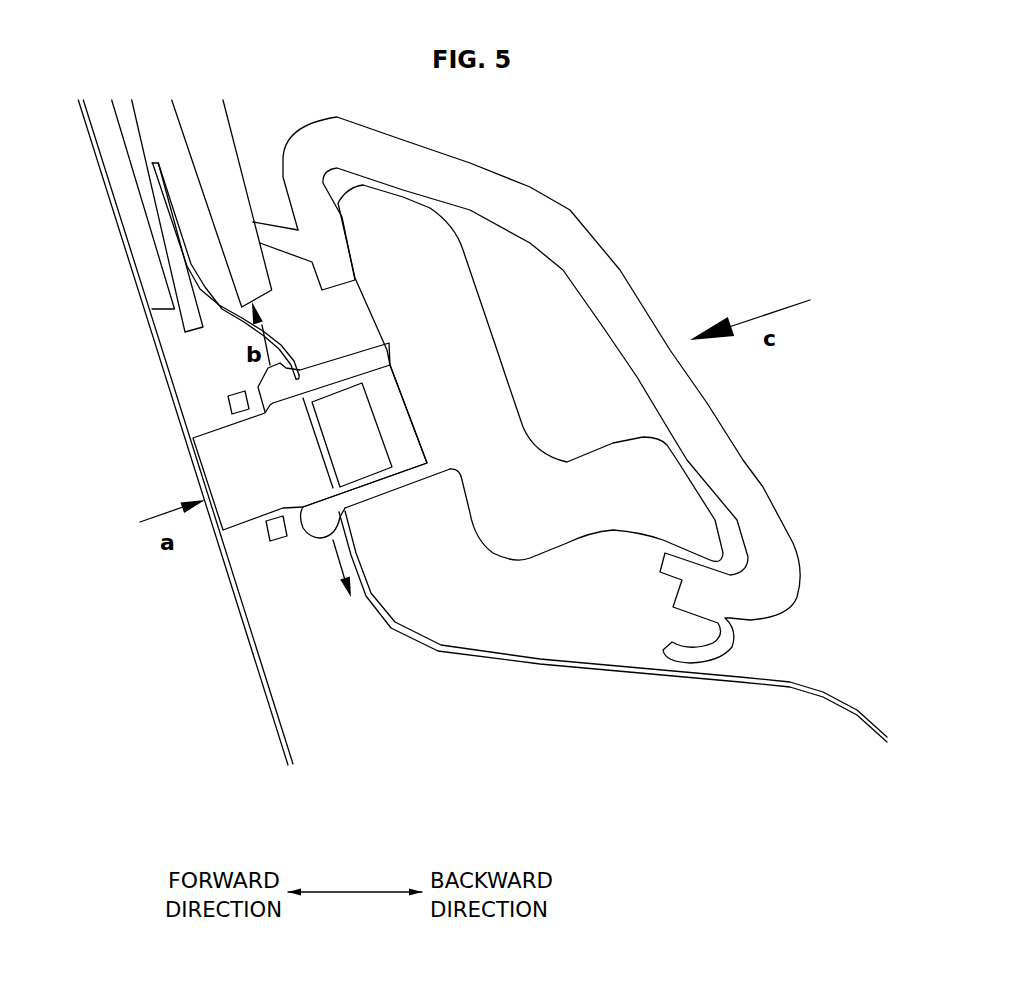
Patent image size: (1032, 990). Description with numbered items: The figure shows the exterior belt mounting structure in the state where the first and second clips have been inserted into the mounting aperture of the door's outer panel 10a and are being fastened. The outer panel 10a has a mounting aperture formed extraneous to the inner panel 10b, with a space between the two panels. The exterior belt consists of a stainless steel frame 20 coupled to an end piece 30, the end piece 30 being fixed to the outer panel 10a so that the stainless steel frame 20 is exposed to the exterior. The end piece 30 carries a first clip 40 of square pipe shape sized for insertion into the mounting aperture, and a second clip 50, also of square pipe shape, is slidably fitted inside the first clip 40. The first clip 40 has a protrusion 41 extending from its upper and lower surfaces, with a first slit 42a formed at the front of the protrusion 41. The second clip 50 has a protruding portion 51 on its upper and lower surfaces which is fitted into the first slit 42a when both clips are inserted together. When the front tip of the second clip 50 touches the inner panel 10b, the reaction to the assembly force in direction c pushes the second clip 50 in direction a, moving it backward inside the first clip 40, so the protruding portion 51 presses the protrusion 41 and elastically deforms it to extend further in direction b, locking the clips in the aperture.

The outer panel 10a is at (600, 668).
The inner panel 10b is at (268, 702).
The stainless steel frame 20 is at (692, 423).
The end piece 30 is at (572, 507).
The first clip 40 is at (373, 503).
The protrusion 41 is at (318, 530).
The first slit 42a is at (254, 398).
The second clip 50 is at (203, 435).
The protruding portion 51 is at (297, 507).